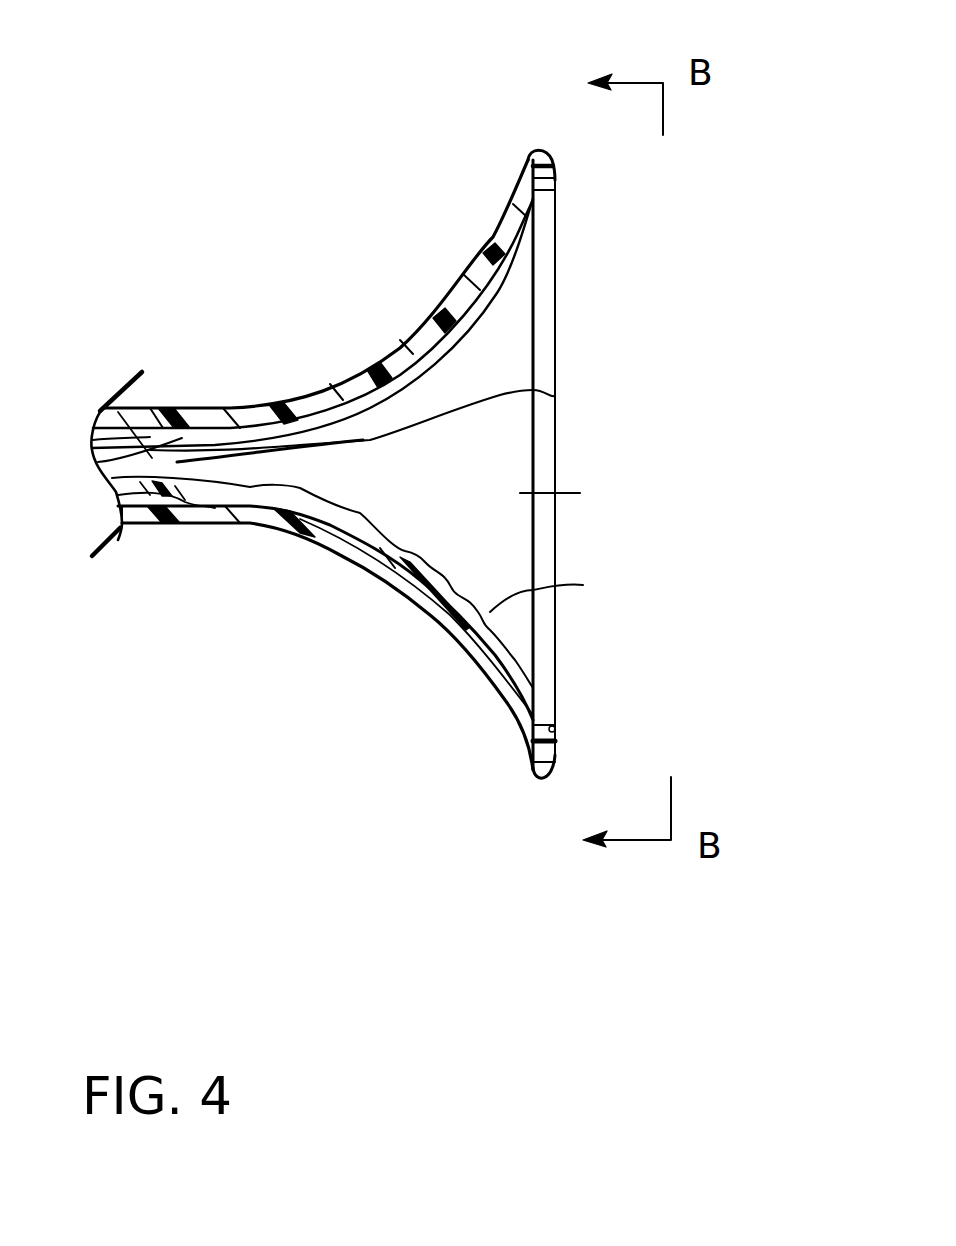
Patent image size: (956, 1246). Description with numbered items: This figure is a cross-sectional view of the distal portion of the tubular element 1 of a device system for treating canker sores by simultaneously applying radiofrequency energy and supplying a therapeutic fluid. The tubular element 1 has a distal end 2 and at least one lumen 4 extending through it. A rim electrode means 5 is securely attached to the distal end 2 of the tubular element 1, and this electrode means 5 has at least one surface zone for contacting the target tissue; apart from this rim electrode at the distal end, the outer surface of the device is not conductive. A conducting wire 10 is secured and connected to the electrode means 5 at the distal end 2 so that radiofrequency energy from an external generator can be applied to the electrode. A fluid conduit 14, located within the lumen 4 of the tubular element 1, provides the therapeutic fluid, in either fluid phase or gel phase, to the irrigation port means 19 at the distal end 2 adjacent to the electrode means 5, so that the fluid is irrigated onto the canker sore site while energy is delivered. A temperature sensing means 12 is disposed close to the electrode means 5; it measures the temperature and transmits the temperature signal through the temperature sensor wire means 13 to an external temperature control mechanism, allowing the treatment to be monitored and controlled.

The tubular element 1 is at (155, 398).
The distal end 2 is at (528, 147).
The lumen 4 is at (138, 493).
The rim electrode means 5 is at (552, 148).
The conducting wire 10 is at (493, 297).
The temperature sensing means 12 is at (560, 722).
The temperature sensor wire means 13 is at (583, 585).
The fluid conduit 14 is at (555, 396).
The irrigation port means 19 is at (580, 493).